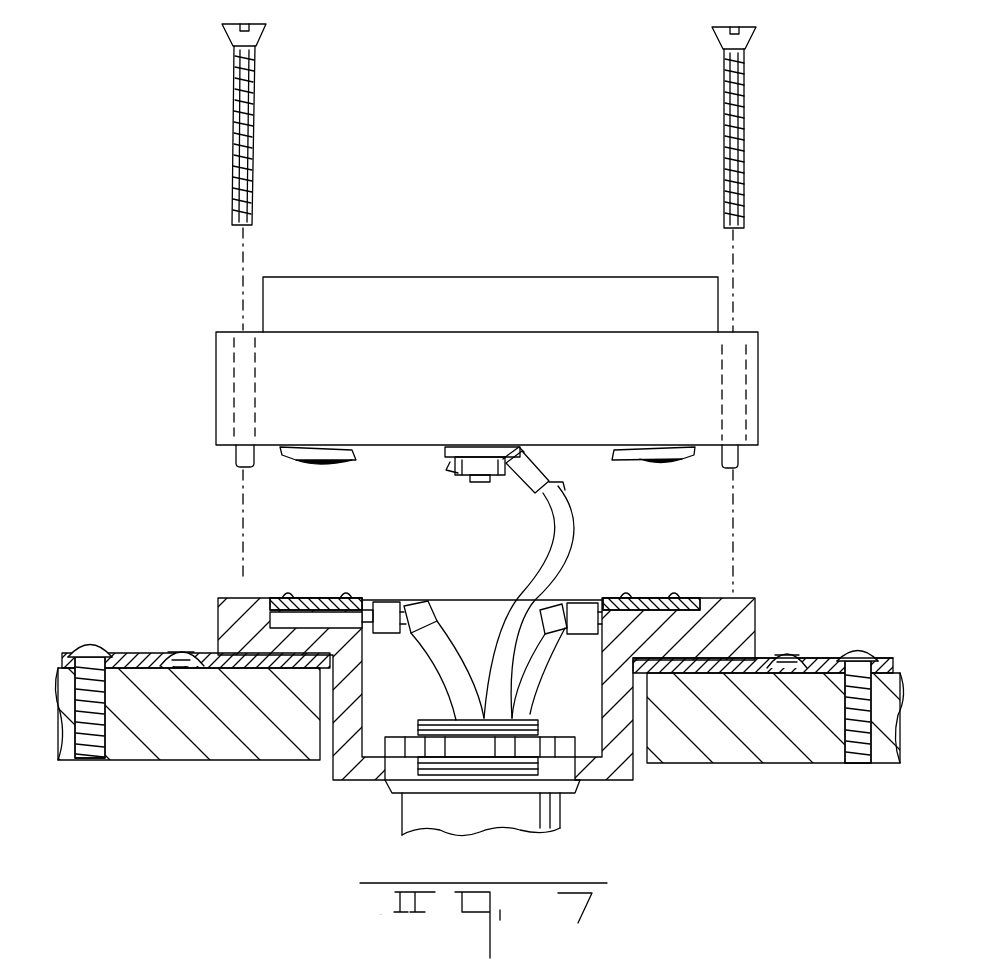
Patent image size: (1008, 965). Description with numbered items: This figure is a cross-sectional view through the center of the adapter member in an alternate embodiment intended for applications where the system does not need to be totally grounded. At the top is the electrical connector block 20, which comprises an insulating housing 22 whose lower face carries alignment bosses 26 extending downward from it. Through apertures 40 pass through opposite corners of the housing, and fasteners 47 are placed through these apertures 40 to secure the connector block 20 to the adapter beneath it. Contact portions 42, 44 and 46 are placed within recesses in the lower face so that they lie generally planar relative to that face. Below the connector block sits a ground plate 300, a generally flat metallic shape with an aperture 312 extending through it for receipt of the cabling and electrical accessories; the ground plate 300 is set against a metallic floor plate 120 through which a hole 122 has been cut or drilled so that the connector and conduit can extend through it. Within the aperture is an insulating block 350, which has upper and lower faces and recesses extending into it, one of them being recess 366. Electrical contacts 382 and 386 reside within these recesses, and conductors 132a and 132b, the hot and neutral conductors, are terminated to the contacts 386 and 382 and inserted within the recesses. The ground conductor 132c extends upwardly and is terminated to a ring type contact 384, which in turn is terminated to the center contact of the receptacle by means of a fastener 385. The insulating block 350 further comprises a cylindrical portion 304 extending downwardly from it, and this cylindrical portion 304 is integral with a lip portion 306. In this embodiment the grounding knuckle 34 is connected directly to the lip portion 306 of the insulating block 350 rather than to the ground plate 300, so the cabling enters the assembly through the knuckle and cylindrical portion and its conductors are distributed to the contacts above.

The fasteners 47 is at (258, 77).
The electrical connector block 20 is at (572, 268).
The insulating housing 22 is at (707, 393).
The through apertures 40 is at (230, 375).
The alignment bosses 26 is at (236, 458).
The contact portion 42 is at (300, 452).
The contact portion 46 is at (692, 468).
The contact portion 44 is at (492, 445).
The fastener 385 is at (452, 468).
The ring type contact 384 is at (522, 488).
The ground conductor 132c is at (573, 513).
The conductor 132a is at (420, 608).
The conductor 132b is at (520, 665).
The floor plate 120 is at (160, 745).
The hole 122 is at (662, 722).
The ground plate 300 is at (818, 655).
The insulating block 350 is at (755, 600).
The electrical contact 386 is at (296, 598).
The recess 366 is at (318, 598).
The electrical contact 382 is at (650, 598).
The aperture 312 is at (348, 668).
The cylindrical portion 304 is at (330, 710).
The lip portion 306 is at (595, 782).
The grounding knuckle 34 is at (405, 823).